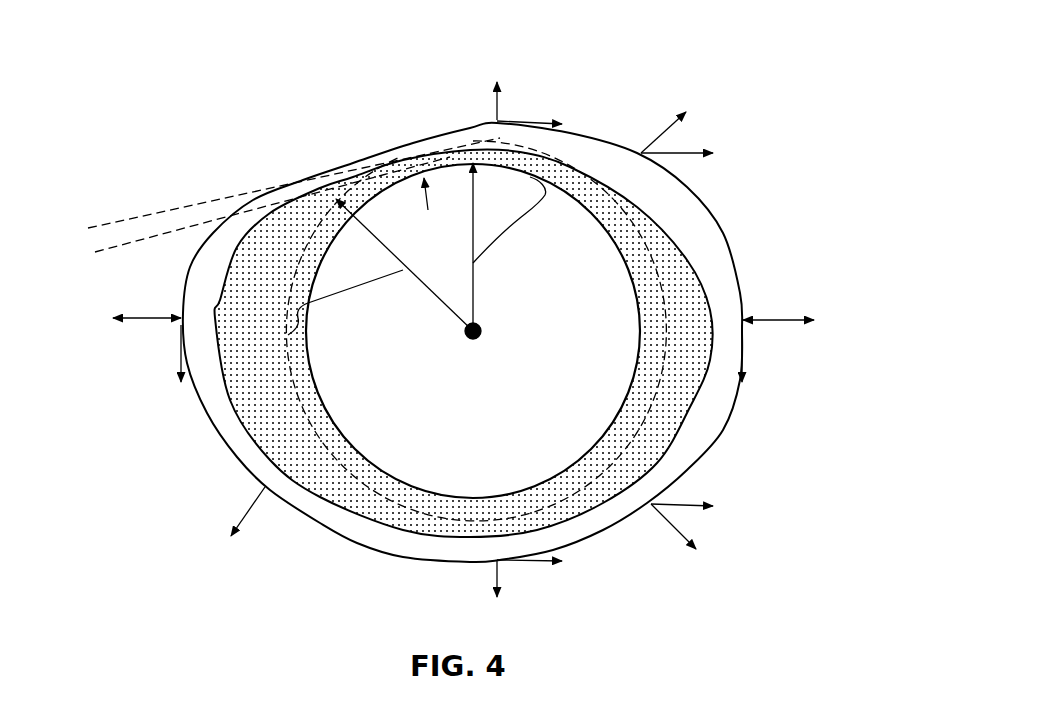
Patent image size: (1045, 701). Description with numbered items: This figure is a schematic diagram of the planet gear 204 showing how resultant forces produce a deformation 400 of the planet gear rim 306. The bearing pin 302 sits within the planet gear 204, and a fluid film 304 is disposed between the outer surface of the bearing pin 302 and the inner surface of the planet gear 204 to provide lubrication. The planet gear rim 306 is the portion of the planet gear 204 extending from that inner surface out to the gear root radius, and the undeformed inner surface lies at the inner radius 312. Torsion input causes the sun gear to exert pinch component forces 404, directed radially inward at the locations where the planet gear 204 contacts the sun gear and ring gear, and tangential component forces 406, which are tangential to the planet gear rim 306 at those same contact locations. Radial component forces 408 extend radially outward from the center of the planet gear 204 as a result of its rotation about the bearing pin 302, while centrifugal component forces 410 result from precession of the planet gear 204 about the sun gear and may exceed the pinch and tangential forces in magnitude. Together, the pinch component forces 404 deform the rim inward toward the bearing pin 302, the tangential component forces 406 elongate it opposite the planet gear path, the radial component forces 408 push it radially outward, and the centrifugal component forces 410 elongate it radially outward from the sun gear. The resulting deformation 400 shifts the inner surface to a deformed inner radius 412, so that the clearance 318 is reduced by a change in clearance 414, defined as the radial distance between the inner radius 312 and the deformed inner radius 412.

The planet gear 204 is at (125, 102).
The bearing pin 302 is at (537, 490).
The fluid film 304 is at (432, 540).
The planet gear rim 306 is at (330, 532).
The inner radius 312 is at (288, 335).
The clearance 318 is at (412, 142).
The deformation 400 is at (345, 147).
The pinch component forces 404 is at (489, 322).
The tangential component forces 406 is at (466, 353).
The radial component forces 408 is at (462, 350).
The centrifugal component forces 410 is at (623, 348).
The deformed inner radius 412 is at (530, 177).
The change in clearance 414 is at (103, 285).